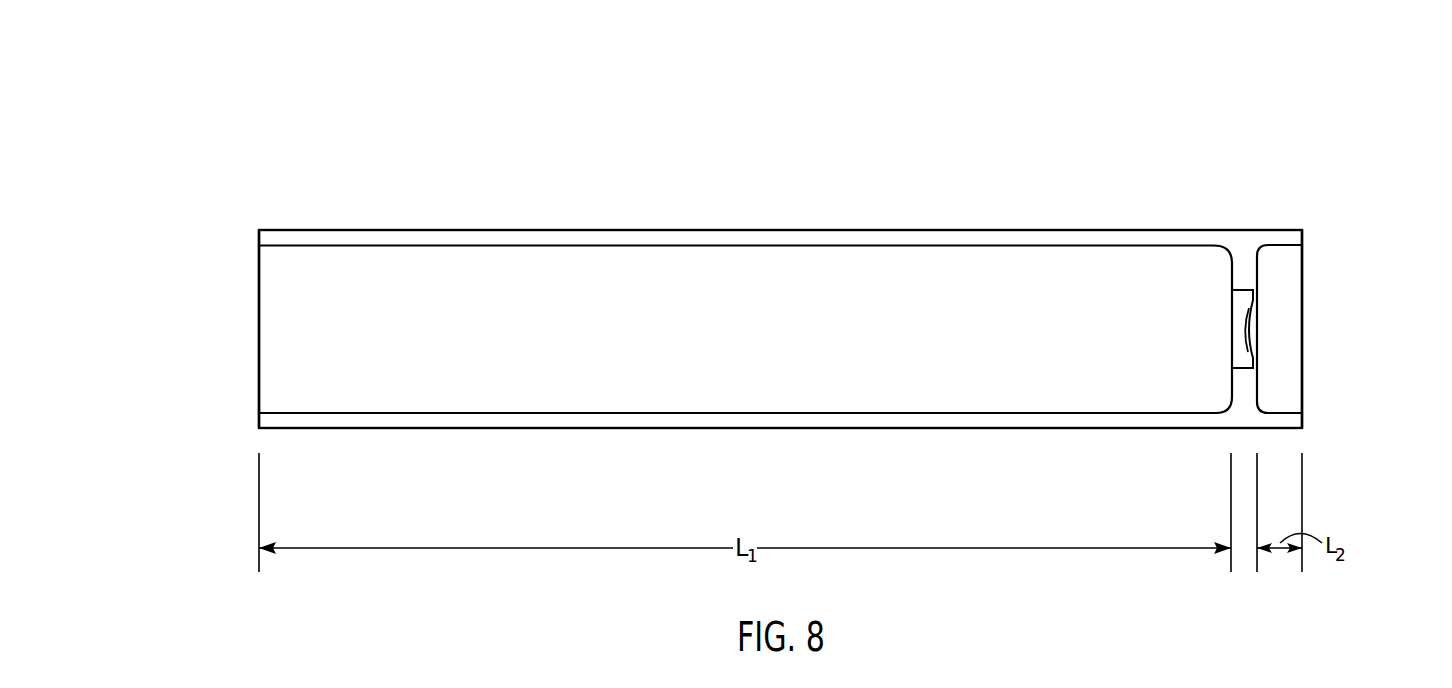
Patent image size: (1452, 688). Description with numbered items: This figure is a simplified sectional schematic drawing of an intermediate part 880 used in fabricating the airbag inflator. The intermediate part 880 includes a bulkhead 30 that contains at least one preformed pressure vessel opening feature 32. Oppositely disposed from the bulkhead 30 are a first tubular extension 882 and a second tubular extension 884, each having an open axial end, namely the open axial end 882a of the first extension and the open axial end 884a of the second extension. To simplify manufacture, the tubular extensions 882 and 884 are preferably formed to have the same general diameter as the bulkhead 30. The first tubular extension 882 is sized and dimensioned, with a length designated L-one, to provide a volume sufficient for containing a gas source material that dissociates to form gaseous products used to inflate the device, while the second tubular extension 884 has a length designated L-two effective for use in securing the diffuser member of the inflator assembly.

The intermediate part 880 is at (914, 193).
The first tubular extension 882 is at (517, 233).
The open axial end of first tubular extension 882a is at (240, 304).
The second tubular extension 884 is at (1290, 233).
The open axial end of second tubular extension 884a is at (1318, 302).
The bulkhead 30 is at (1233, 265).
The preformed pressure vessel opening feature 32 is at (1257, 325).